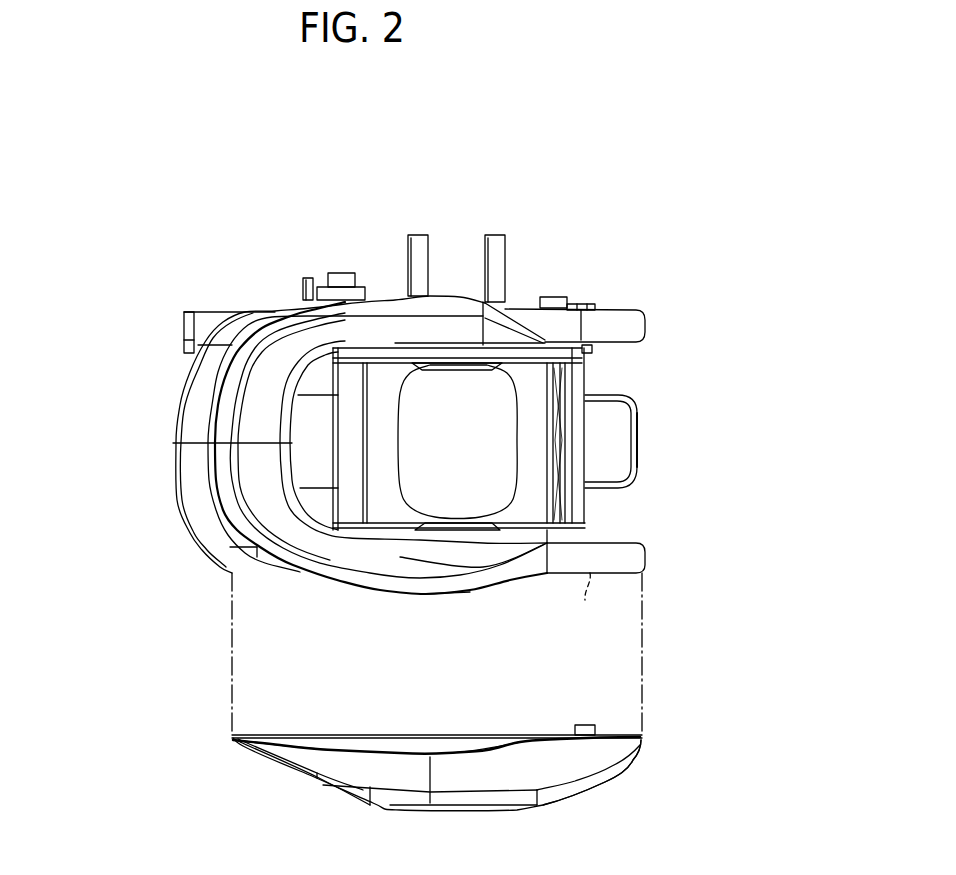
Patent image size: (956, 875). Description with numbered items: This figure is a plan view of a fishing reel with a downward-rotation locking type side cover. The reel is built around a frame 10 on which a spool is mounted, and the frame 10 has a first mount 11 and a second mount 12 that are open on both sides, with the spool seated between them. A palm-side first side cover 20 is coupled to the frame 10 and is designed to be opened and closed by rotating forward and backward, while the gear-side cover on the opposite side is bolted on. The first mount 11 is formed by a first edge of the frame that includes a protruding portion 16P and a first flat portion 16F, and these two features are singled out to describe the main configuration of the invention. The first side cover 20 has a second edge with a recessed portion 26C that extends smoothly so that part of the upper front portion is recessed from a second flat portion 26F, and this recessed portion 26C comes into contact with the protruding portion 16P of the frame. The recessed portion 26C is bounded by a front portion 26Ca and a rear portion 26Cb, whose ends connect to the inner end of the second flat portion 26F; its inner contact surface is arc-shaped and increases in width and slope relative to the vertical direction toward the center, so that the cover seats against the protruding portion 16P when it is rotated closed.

The frame 10 is at (162, 396).
The first mount 11 is at (445, 607).
The second mount 12 is at (455, 282).
The protruding portion 16P is at (373, 590).
The first flat portion 16F is at (613, 573).
The first side cover 20 is at (203, 713).
The recessed portion 26C is at (413, 750).
The front portion of the recessed portion 26Ca is at (303, 733).
The rear portion of the recessed portion 26Cb is at (500, 733).
The second flat portion 26F is at (555, 733).